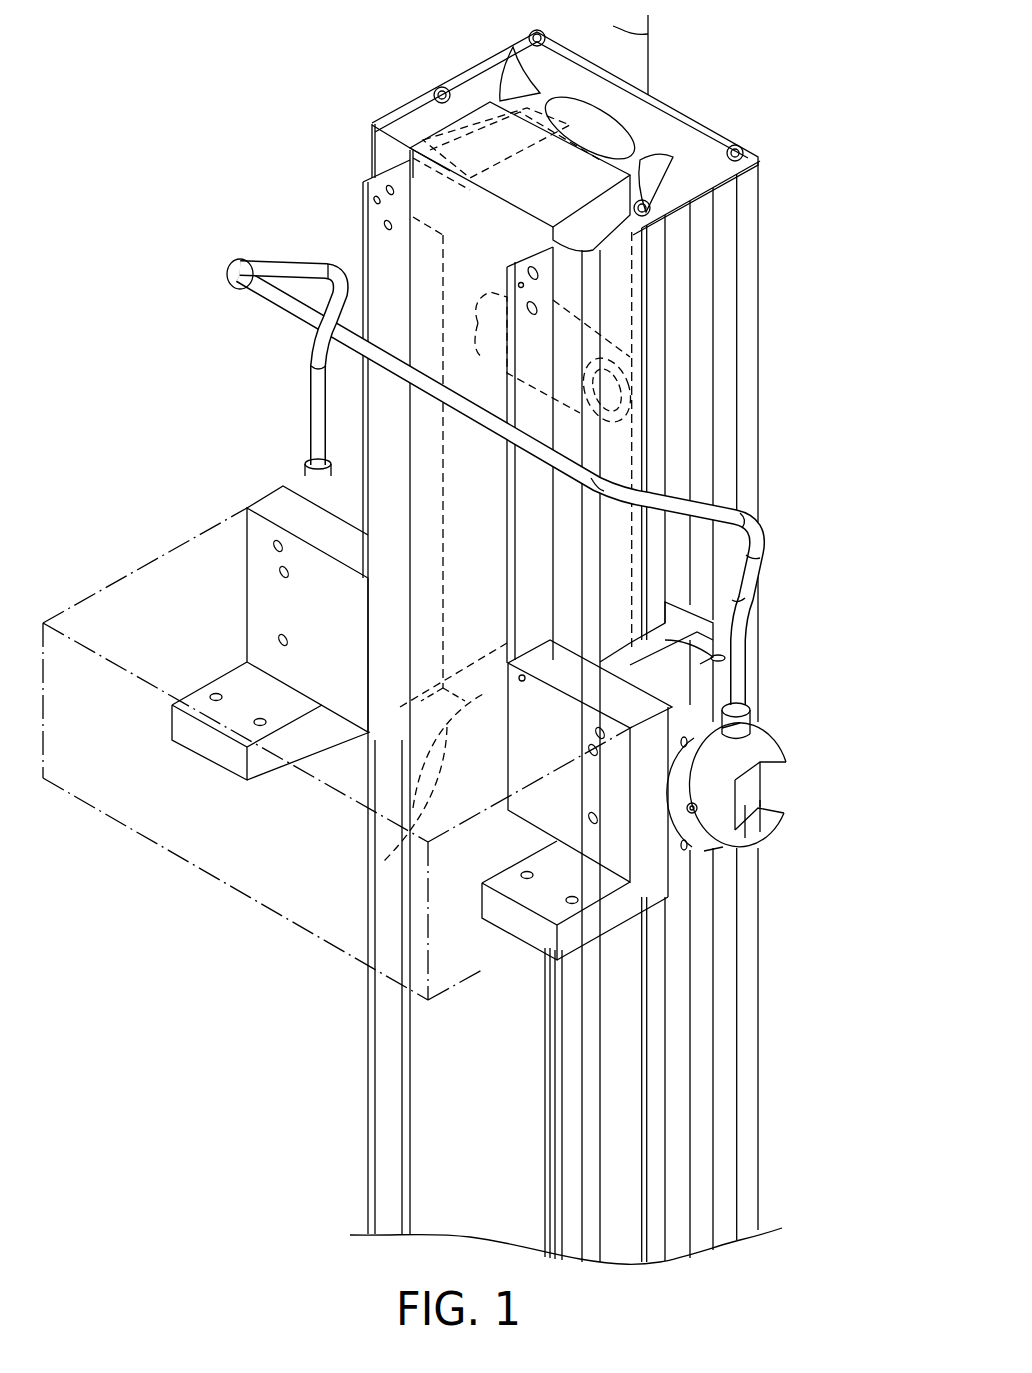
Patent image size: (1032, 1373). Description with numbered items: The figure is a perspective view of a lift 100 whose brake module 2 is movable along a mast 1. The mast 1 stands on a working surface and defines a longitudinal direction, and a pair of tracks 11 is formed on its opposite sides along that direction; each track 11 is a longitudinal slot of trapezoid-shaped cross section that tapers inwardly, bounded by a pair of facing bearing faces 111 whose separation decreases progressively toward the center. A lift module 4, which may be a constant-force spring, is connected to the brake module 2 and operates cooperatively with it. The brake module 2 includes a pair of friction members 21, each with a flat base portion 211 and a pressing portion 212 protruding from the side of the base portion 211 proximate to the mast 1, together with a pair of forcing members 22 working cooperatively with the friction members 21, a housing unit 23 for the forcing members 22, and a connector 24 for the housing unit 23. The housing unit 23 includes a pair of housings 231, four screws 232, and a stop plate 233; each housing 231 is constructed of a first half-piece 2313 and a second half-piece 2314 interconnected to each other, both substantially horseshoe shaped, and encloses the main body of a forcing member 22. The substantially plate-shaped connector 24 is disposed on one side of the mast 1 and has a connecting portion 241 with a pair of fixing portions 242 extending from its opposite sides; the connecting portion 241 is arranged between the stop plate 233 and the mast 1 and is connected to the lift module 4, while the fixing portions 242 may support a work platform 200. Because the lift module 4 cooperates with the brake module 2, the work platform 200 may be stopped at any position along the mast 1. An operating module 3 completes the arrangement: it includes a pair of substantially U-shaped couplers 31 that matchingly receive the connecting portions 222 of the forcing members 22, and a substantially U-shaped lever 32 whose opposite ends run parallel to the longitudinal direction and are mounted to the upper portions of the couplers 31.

The lift 100 is at (182, 127).
The mast 1 is at (397, 101).
The stop plate 233 is at (492, 158).
The track 11 is at (727, 229).
The bearing face 111 is at (678, 297).
The lift module 4 is at (634, 378).
The brake module 2 is at (201, 673).
The housing unit 23 is at (108, 430).
The housing 231 is at (165, 398).
The first half-piece 2313 is at (360, 457).
The second half-piece 2314 is at (313, 490).
The connector 24 is at (288, 788).
The fixing portion 242 is at (343, 682).
The connecting portion 241 is at (400, 830).
The work platform 200 is at (195, 865).
The friction member 21 is at (842, 560).
The pressing portion 212 is at (672, 606).
The base portion 211 is at (653, 648).
The screw 232 is at (743, 660).
The forcing member 22 is at (828, 828).
The connecting portion 222 is at (743, 807).
The operating module 3 is at (842, 712).
The lever 32 is at (737, 688).
The coupler 31 is at (783, 780).